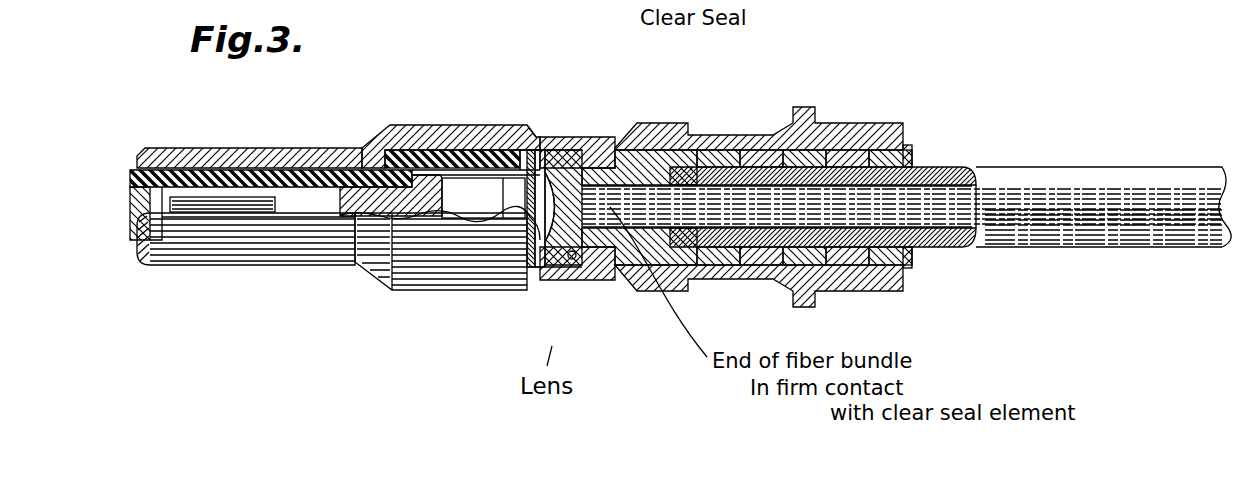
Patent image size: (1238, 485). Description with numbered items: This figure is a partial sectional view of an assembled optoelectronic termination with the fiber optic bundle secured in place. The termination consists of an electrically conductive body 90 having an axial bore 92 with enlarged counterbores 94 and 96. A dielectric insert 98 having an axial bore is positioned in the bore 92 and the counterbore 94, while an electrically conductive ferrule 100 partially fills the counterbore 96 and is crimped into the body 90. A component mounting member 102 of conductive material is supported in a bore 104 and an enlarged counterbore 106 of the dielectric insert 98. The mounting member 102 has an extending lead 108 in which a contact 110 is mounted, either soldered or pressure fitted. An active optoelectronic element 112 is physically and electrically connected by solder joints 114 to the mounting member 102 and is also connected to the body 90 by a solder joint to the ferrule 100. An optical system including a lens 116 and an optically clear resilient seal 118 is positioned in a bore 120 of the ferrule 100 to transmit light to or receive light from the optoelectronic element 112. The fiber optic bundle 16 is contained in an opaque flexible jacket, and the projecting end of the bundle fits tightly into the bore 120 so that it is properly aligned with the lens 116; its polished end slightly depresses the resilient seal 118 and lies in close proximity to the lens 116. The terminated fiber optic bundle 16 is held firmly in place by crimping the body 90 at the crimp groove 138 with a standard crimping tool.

The fiber optic bundle 16 is at (1084, 168).
The electrically conductive body 90 is at (497, 135).
The axial bore 92 is at (344, 178).
The counterbore 94 is at (466, 148).
The counterbore 96 is at (584, 176).
The dielectric insert 98 is at (188, 172).
The electrically conductive ferrule 100 is at (540, 165).
The component mounting member 102 is at (427, 172).
The bore 104 is at (242, 176).
The enlarged counterbore 106 is at (477, 148).
The extending lead 108 is at (402, 158).
The contact 110 is at (298, 203).
The active optoelectronic element 112 is at (478, 214).
The solder joints 114 is at (483, 198).
The lens 116 is at (547, 243).
The optically clear resilient seal 118 is at (558, 177).
The bore 120 is at (576, 262).
The crimp groove 138 is at (747, 133).